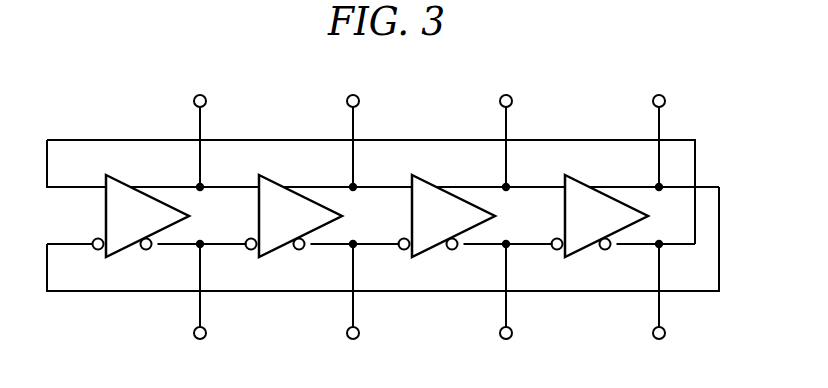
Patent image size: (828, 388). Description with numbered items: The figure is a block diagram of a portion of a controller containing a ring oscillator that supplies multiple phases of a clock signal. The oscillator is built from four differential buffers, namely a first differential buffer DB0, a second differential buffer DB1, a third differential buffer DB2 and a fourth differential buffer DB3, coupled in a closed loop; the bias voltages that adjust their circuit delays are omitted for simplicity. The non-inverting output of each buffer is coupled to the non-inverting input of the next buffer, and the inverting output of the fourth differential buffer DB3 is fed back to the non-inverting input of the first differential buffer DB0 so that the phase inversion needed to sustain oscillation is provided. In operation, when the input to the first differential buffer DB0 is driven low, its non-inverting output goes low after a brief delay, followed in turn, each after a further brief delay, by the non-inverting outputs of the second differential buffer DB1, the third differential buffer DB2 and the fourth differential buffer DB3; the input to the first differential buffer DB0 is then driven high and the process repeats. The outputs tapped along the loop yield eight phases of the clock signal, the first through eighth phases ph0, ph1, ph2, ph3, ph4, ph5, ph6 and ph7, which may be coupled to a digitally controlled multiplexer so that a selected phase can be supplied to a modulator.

The first differential buffer DB0 is at (141, 216).
The second differential buffer DB1 is at (294, 216).
The third differential buffer DB2 is at (447, 216).
The fourth differential buffer DB3 is at (600, 216).
The first phase ph0 is at (201, 130).
The second phase ph1 is at (354, 130).
The third phase ph2 is at (507, 130).
The fourth phase ph3 is at (660, 130).
The fifth phase ph4 is at (201, 309).
The sixth phase ph5 is at (354, 309).
The seventh phase ph6 is at (507, 309).
The eighth phase ph7 is at (660, 309).